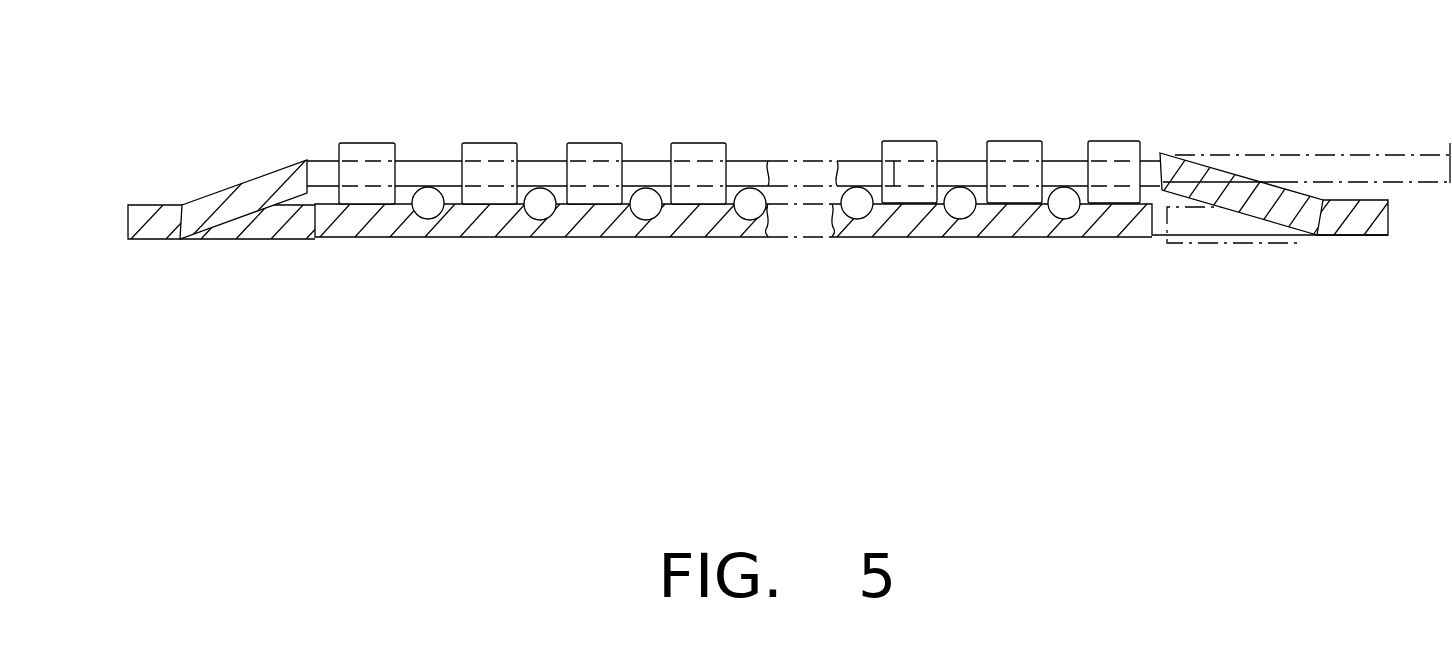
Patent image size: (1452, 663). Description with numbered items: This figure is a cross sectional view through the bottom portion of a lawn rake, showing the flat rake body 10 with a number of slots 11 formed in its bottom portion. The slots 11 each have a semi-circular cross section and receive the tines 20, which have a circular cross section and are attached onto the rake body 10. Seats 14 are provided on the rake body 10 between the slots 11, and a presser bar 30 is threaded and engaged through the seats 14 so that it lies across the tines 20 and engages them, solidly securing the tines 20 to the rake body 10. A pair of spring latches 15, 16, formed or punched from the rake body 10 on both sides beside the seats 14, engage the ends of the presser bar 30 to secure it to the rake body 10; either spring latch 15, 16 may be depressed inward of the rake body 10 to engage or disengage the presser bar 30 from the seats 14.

The rake body 10 is at (982, 228).
The slots 11 is at (1068, 220).
The seats 14 is at (910, 143).
The spring latch 15 is at (1240, 197).
The spring latch 16 is at (245, 200).
The tines 20 is at (1064, 193).
The presser bar 30 is at (1213, 155).